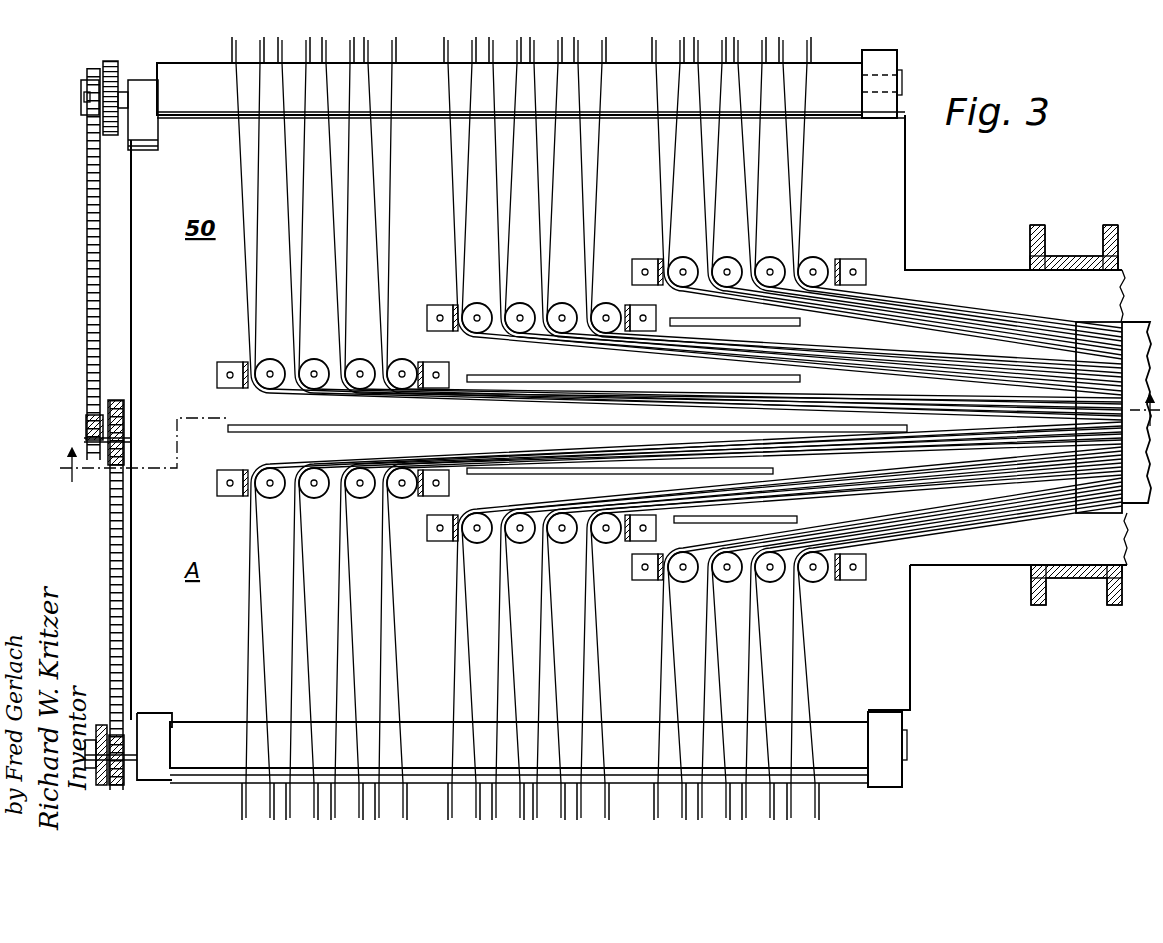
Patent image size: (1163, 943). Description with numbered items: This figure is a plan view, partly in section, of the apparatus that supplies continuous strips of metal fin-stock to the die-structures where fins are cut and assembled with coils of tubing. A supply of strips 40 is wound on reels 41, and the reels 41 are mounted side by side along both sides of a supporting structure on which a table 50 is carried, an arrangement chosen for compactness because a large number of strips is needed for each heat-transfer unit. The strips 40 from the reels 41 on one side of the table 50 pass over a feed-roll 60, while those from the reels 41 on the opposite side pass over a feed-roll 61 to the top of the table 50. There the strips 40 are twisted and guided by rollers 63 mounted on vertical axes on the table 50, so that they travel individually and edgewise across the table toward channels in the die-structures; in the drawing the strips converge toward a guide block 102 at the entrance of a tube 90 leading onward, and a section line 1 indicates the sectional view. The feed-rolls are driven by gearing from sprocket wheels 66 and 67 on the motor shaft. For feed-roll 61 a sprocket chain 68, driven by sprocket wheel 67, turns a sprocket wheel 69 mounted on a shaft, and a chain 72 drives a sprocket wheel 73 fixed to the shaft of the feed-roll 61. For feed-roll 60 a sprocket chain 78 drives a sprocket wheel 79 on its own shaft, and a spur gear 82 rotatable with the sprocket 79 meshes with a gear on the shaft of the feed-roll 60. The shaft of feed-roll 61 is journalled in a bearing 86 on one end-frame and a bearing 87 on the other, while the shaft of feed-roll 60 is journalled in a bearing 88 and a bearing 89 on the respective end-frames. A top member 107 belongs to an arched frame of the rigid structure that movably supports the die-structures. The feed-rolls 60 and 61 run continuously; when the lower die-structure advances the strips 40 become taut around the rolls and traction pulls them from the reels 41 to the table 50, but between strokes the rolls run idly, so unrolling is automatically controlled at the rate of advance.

The section line 1- 1 is at (609, 440).
The strips of fin-stock 40 is at (778, 96).
The reels 41 is at (812, 46).
The table 50 is at (611, 417).
The feed-roll 60 is at (191, 76).
The feed-roll 61 is at (190, 778).
The rollers 63 is at (258, 364).
The sprocket wheel 66 is at (114, 466).
The sprocket wheel 67 is at (88, 408).
The sprocket chain 68 is at (110, 612).
The sprocket wheel 69 is at (120, 784).
The chain 72 is at (102, 736).
The sprocket wheel 73 is at (98, 788).
The sprocket chain 78 is at (86, 270).
The sprocket wheel 79 is at (81, 108).
The spur gear 82 is at (123, 138).
The bearing 86 is at (899, 770).
The bearing 87 is at (166, 710).
The bearing 88 is at (899, 76).
The bearing 89 is at (142, 81).
The tube 90 is at (1142, 320).
The guide block 102 is at (1092, 332).
The top member 107 is at (1072, 582).